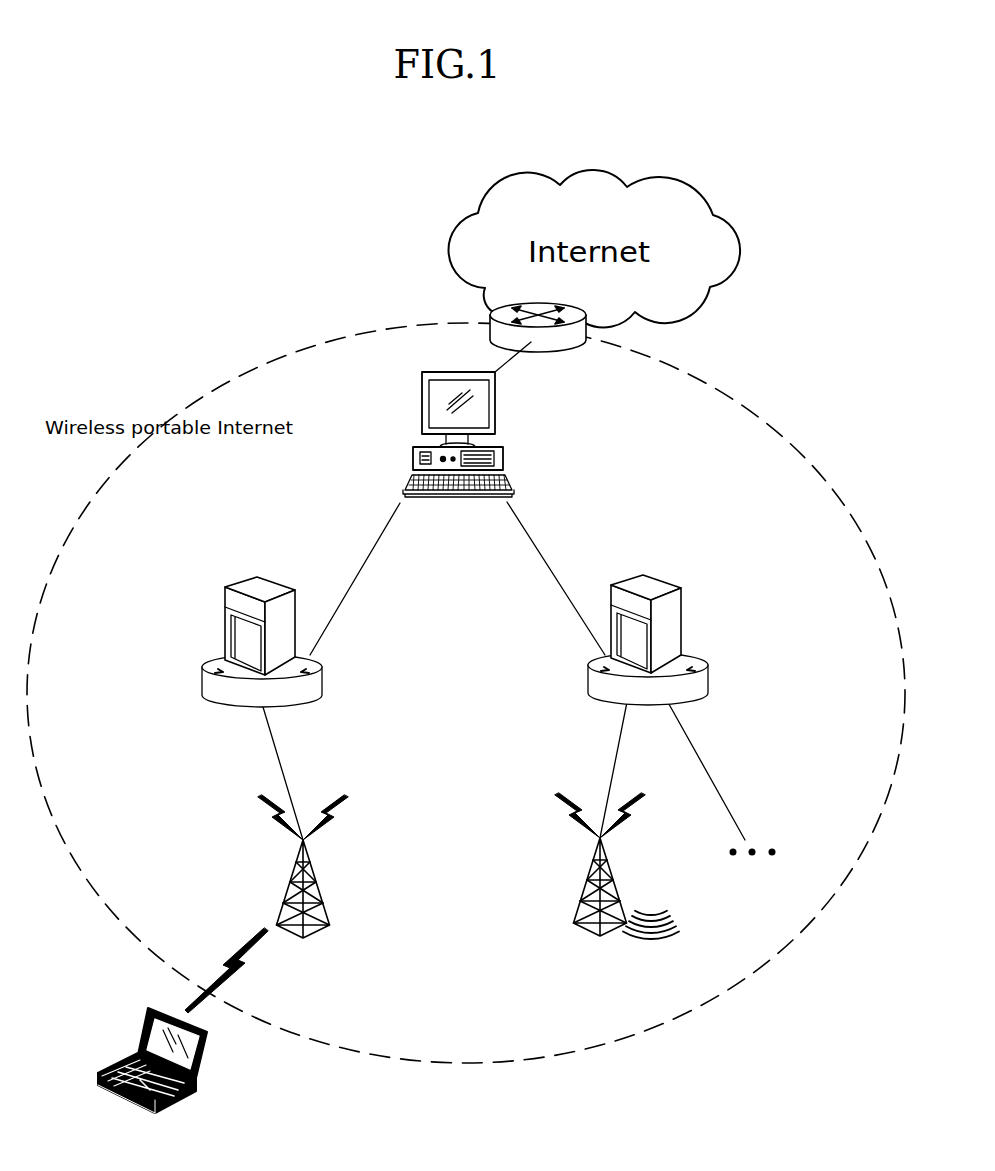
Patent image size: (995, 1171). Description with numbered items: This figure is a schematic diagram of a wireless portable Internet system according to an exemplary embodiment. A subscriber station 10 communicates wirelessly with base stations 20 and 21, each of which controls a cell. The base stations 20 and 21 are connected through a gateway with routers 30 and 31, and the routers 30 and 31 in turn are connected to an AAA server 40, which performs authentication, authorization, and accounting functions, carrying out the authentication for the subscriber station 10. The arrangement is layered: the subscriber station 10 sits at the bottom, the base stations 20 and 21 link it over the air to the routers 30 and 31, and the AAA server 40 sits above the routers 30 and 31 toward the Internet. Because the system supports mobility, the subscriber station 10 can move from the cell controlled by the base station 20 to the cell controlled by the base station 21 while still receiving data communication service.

The subscriber station 10 is at (206, 1056).
The base station 20 is at (325, 888).
The base station 21 is at (580, 888).
The router 30 is at (218, 628).
The router 31 is at (690, 628).
The AAA server 40 is at (497, 402).